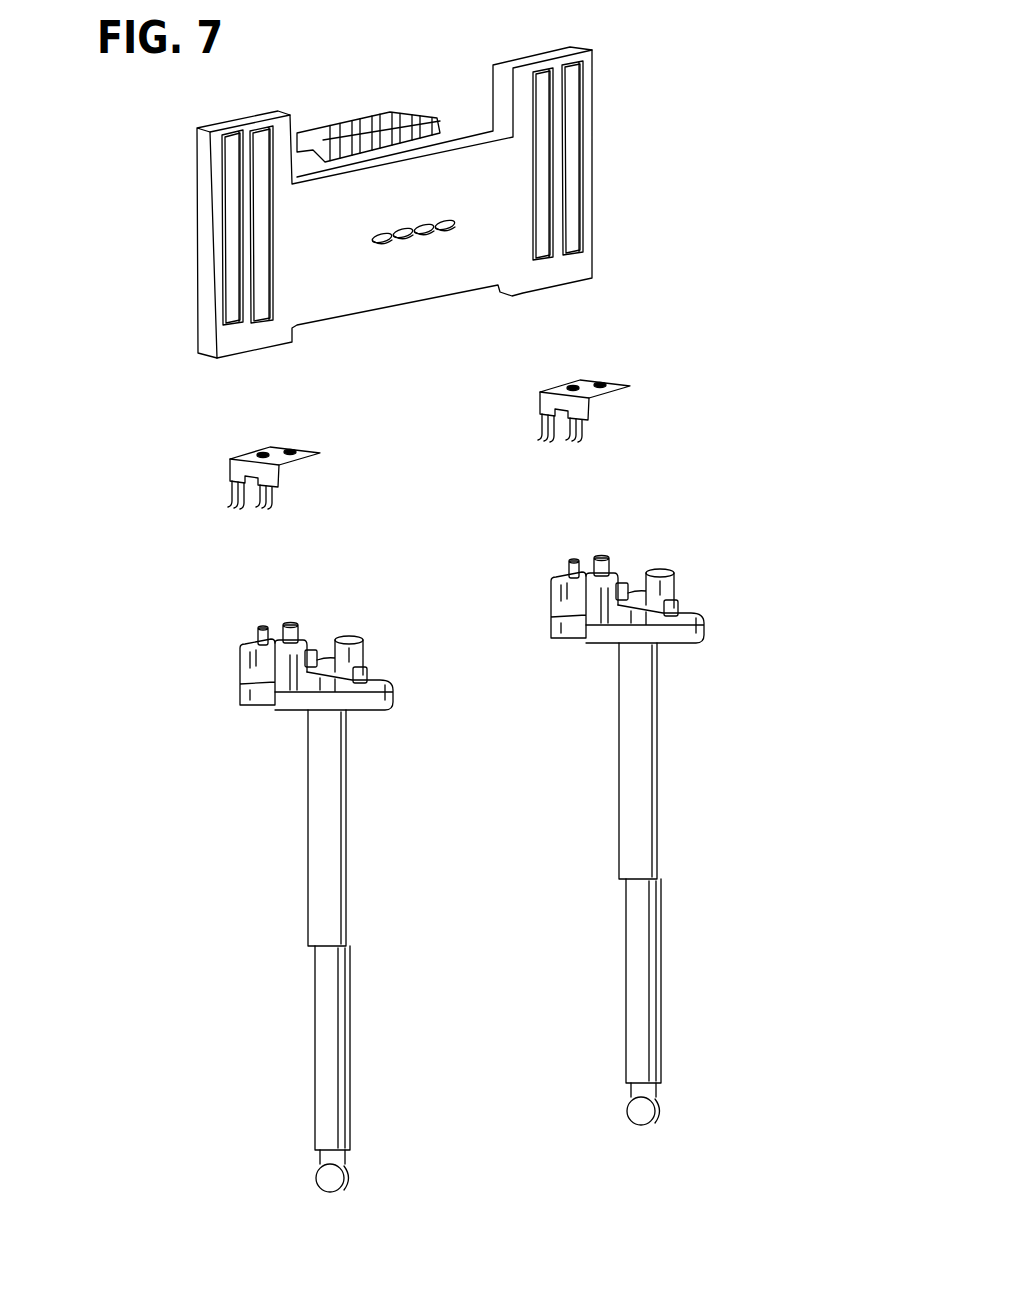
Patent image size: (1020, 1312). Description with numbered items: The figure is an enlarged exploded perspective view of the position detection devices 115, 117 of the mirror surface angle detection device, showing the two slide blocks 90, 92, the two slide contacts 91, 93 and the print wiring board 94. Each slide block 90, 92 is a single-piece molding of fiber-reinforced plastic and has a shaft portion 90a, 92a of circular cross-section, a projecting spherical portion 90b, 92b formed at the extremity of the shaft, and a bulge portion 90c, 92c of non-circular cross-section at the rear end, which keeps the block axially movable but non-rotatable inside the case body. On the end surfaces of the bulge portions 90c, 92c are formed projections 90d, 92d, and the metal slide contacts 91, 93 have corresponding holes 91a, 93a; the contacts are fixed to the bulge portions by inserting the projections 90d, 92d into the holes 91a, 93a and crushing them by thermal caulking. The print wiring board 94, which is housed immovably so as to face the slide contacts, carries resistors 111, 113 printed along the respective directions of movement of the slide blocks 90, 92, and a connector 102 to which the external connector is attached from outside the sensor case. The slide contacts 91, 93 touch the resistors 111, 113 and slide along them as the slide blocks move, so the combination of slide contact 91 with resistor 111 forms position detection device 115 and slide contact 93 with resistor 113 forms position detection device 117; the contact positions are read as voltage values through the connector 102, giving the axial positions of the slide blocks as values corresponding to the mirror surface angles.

The print wiring board 94 is at (437, 229).
The connector 102 is at (347, 130).
The resistor 111 is at (263, 302).
The resistor 113 is at (573, 238).
The position detection device 115 is at (159, 272).
The position detection device 117 is at (681, 202).
The slide block 90 is at (377, 872).
The shaft portion 90a is at (334, 1024).
The projecting spherical portion 90b is at (346, 1176).
The bulge portion 90c is at (393, 687).
The projection 90d is at (290, 624).
The slide contact 91 is at (302, 443).
The hole 91a is at (290, 450).
The slide block 92 is at (678, 819).
The shaft portion 92a is at (645, 929).
The projecting spherical portion 92b is at (656, 1108).
The bulge portion 92c is at (705, 620).
The projection 92d is at (601, 556).
The slide contact 93 is at (620, 383).
The hole 93a is at (600, 384).